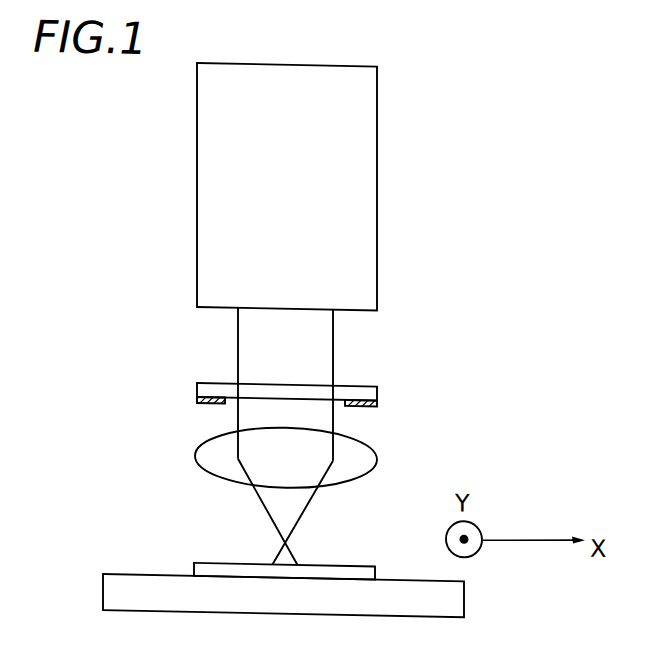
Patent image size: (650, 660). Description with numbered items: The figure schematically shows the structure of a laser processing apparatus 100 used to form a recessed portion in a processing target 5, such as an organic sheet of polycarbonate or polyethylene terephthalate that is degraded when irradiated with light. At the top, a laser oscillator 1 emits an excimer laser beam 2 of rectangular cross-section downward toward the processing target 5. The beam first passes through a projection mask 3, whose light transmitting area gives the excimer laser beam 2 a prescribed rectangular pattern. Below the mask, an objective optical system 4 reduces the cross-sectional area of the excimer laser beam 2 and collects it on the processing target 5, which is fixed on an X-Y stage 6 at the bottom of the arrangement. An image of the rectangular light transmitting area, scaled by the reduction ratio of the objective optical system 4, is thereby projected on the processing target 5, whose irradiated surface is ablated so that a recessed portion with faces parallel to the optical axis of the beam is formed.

The laser oscillator 1 is at (345, 206).
The excimer laser beam 2 is at (318, 356).
The projection mask 3 is at (193, 385).
The objective optical system 4 is at (210, 449).
The processing target 5 is at (200, 559).
The X-Y stage 6 is at (125, 586).
The laser processing apparatus 100 is at (509, 250).